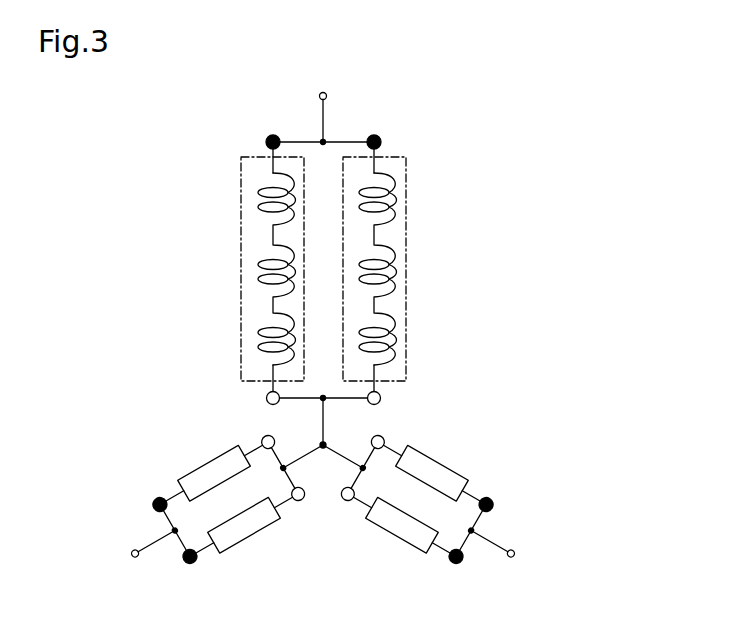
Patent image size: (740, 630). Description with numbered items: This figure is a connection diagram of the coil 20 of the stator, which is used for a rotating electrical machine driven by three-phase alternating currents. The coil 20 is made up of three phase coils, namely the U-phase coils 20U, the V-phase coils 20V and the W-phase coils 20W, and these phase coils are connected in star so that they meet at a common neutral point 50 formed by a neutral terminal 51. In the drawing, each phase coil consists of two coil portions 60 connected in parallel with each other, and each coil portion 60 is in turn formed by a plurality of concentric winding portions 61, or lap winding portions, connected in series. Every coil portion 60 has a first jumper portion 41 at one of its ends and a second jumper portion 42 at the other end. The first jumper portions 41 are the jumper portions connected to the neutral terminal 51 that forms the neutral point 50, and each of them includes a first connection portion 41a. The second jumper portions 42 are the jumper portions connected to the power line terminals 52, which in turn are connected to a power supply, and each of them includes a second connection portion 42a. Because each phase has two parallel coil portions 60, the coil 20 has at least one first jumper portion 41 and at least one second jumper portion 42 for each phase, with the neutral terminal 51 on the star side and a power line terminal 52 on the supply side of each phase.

The coil 20 is at (538, 158).
The U-phase coils 20U is at (431, 250).
The V-phase coils 20V is at (473, 458).
The W-phase coils 20W is at (196, 455).
The first jumper portion 41 is at (338, 396).
The first connection portion 41a is at (382, 397).
The second jumper portion 42 is at (300, 135).
The second connection portion 42a is at (386, 137).
The neutral point 50 is at (323, 445).
The neutral terminal 51 is at (327, 443).
The power line terminal 52 is at (326, 92).
The coil portion 60 is at (240, 233).
The concentric winding portion 61 is at (392, 250).